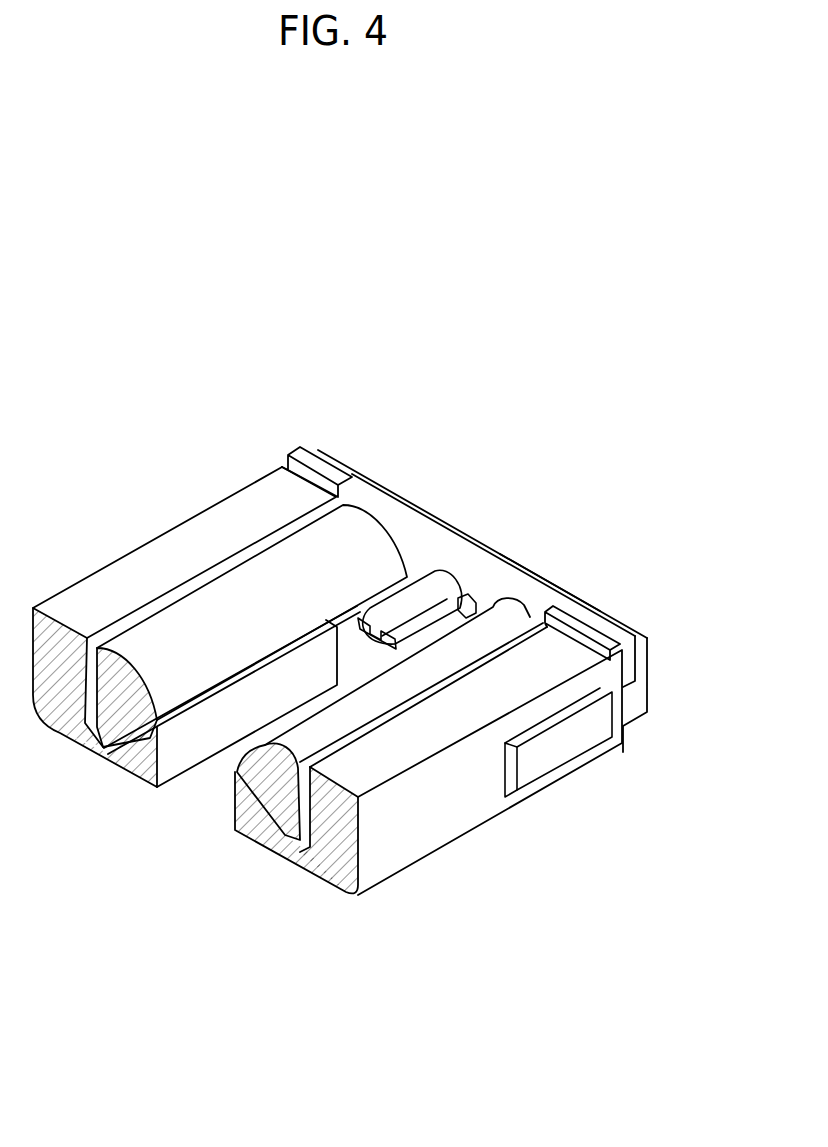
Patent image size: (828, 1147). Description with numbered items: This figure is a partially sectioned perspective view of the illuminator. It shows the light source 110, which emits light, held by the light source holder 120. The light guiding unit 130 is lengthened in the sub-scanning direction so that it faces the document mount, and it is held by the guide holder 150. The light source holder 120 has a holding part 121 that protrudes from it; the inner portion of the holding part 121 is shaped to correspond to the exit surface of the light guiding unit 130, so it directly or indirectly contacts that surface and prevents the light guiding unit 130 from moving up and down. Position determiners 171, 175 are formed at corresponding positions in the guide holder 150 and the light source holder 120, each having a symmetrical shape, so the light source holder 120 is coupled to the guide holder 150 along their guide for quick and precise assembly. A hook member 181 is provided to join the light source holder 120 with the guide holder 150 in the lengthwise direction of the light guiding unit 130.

The light source 110 is at (637, 693).
The light source holder 120 is at (540, 598).
The holding part 121 is at (570, 592).
The light guiding unit 130 is at (365, 553).
The guide holder 150 is at (321, 869).
The position determiner 171 is at (393, 607).
The position determiner 175 is at (461, 598).
The hook member 181 is at (567, 742).